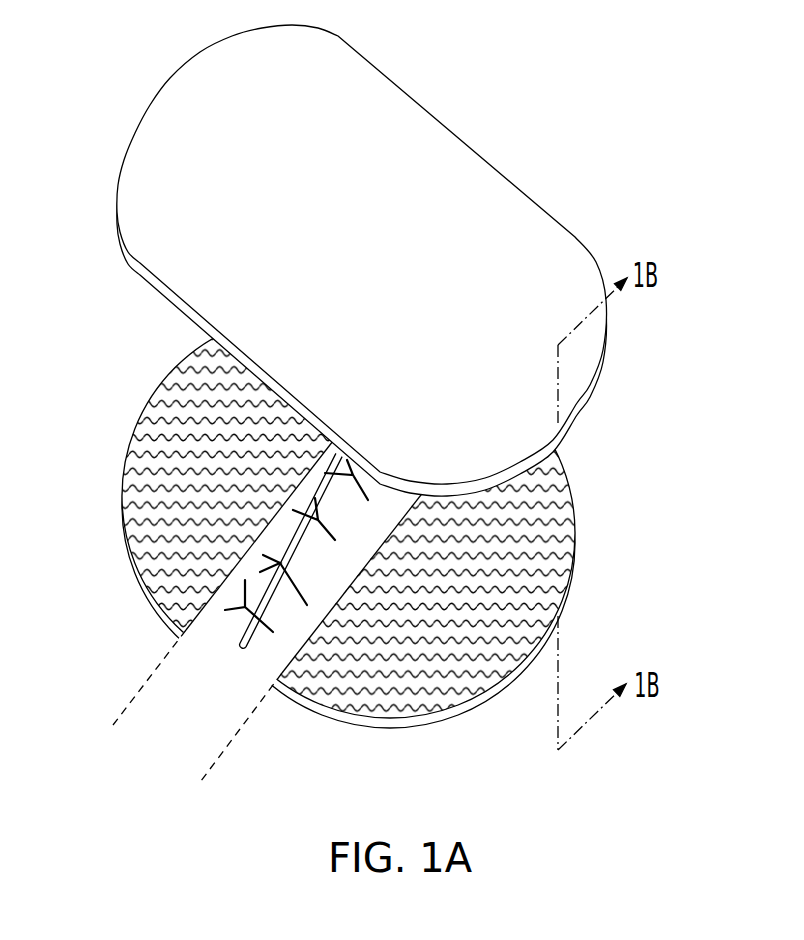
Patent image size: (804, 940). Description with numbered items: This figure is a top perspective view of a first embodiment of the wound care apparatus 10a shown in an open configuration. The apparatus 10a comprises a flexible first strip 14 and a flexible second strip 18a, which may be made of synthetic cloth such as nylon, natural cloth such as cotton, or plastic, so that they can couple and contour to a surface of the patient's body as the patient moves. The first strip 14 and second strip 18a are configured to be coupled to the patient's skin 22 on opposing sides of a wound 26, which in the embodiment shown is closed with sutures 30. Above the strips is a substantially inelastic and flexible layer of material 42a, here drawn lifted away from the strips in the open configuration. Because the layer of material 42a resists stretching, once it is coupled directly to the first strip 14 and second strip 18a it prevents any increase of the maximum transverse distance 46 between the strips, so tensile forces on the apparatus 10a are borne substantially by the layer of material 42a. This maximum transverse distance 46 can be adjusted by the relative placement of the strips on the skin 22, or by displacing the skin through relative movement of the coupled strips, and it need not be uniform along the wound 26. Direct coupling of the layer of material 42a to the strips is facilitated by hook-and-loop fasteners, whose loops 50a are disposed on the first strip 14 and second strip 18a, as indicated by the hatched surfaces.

The wound care apparatus 10a is at (433, 62).
The layer of material 42a is at (485, 176).
The first strip 14 is at (285, 501).
The second strip 18a is at (572, 532).
The loops 50a is at (187, 383).
The patient's skin 22 is at (90, 572).
The sutures 30 is at (303, 588).
The wound 26 is at (264, 648).
The maximum transverse distance 46 is at (117, 722).